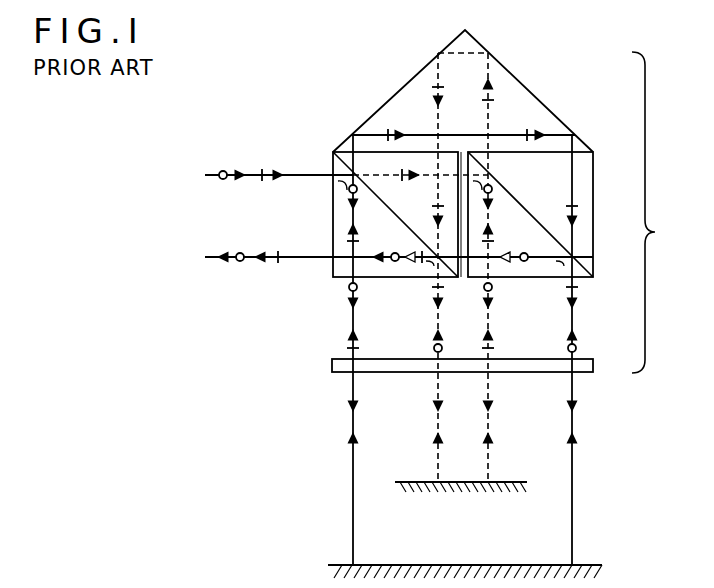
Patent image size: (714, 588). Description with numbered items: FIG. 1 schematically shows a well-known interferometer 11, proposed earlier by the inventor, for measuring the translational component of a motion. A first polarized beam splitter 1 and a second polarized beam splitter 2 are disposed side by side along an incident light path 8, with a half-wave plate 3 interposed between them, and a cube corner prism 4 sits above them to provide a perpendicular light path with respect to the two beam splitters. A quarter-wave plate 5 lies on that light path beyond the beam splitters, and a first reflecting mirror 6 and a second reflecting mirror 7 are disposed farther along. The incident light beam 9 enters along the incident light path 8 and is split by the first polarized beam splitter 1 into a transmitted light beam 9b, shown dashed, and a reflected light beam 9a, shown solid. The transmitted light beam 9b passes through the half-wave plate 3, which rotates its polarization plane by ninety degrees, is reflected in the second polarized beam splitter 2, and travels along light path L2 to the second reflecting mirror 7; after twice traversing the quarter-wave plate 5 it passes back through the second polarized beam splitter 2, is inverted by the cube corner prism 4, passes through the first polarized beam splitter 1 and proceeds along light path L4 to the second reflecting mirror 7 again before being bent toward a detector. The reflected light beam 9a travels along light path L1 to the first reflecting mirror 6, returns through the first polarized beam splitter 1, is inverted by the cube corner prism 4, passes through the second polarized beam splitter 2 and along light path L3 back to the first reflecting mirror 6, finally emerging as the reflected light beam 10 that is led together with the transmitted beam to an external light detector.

The first polarized beam splitter 1 is at (337, 219).
The second polarized beam splitter 2 is at (590, 180).
The half-wave plate 3 is at (462, 165).
The cube corner prism 4 is at (398, 100).
The quarter-wave plate 5 is at (585, 370).
The first reflecting mirror 6 is at (342, 565).
The second reflecting mirror 7 is at (512, 482).
The incident light path 8 is at (310, 172).
The incident light beam 9 is at (288, 163).
The reflected light beam 9a is at (355, 213).
The transmitted light beam 9b is at (383, 176).
The reflected light beam 10 is at (288, 266).
The interferometer 11 is at (662, 212).
The light path L1 is at (353, 391).
The light path L2 is at (488, 390).
The light path L3 is at (572, 392).
The light path L4 is at (438, 393).